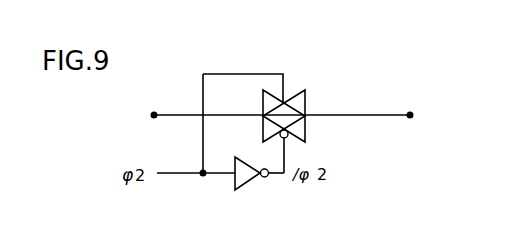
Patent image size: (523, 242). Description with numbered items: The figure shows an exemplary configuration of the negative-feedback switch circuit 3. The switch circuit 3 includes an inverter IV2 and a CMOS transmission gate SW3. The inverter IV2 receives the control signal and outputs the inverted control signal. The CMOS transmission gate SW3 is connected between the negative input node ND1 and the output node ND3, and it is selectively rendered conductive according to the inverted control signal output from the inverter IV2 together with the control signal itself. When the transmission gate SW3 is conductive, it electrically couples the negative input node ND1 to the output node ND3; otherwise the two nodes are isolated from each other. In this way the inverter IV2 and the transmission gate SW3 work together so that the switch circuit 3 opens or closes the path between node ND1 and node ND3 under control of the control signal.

The negative input node ND1 is at (154, 110).
The output node ND3 is at (411, 110).
The CMOS transmission gate SW3 is at (309, 100).
The inverter IV2 is at (245, 191).
The switch circuit 3 is at (316, 222).